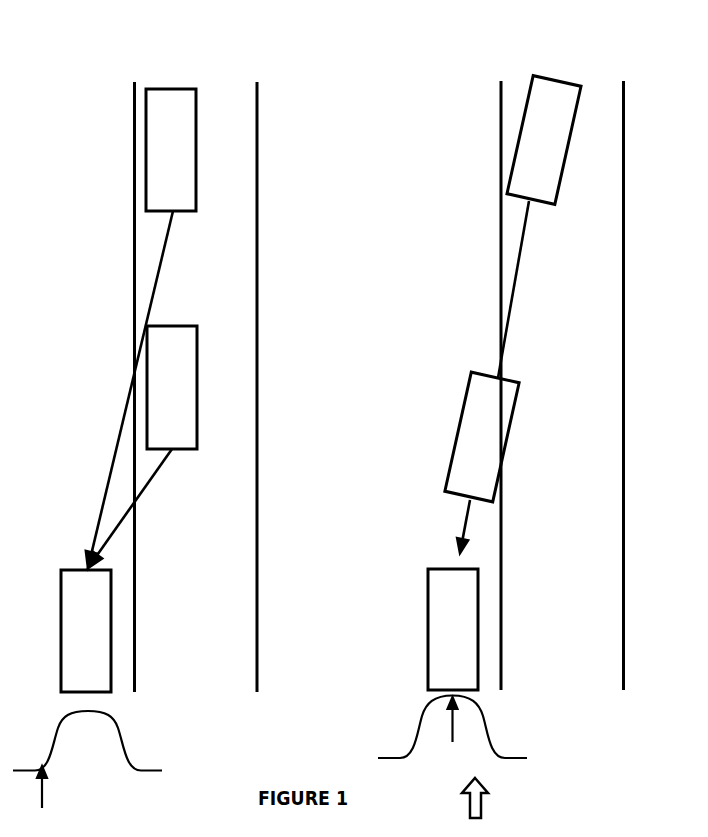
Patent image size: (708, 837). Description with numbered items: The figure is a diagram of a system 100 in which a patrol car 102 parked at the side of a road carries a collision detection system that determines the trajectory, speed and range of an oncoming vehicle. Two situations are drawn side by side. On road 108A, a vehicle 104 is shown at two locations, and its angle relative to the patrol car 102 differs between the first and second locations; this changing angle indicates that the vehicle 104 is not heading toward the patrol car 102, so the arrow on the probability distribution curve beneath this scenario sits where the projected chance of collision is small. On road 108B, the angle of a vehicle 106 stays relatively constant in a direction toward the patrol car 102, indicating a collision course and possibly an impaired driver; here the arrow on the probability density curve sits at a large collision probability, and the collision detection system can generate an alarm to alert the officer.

The system 100 is at (455, 798).
The patrol car 102 is at (97, 613).
The vehicle 104 is at (182, 132).
The vehicle 106 is at (555, 122).
The road 108A is at (196, 387).
The road 108B is at (562, 386).